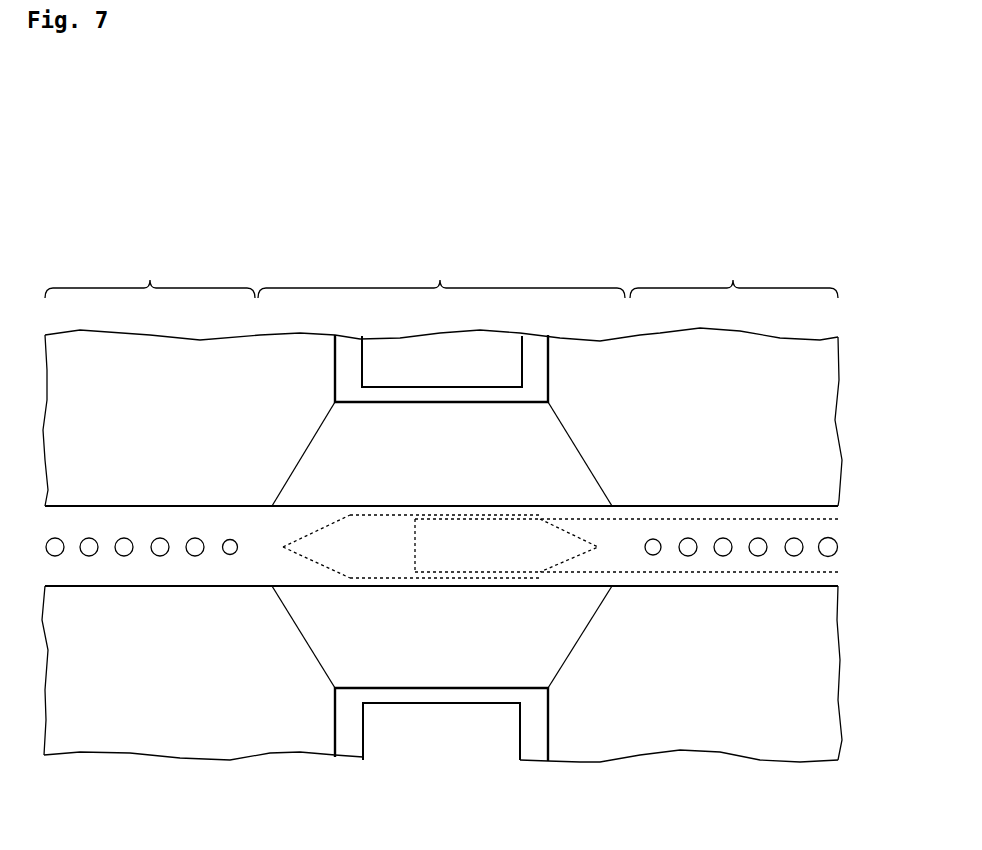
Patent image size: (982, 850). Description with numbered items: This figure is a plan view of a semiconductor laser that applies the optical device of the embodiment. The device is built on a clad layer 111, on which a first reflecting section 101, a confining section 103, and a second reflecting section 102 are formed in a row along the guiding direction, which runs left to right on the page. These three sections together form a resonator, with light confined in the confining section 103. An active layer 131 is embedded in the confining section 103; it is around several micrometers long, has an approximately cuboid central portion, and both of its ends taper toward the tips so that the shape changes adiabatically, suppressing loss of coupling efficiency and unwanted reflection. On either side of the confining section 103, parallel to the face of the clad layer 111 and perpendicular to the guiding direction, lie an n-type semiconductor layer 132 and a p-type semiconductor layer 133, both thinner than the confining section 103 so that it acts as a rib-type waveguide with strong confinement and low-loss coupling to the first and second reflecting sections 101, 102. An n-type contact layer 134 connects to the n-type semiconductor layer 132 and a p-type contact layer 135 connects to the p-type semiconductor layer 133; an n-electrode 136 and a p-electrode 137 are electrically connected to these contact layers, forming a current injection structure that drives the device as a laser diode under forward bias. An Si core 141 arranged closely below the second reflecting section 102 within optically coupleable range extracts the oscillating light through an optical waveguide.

The first reflecting section 101 is at (150, 280).
The second reflecting section 102 is at (733, 280).
The confining section 103 is at (440, 280).
The clad layer 111 is at (838, 390).
The active layer 131 is at (388, 550).
The n-type semiconductor layer 132 is at (573, 632).
The p-type semiconductor layer 133 is at (568, 440).
The n-type contact layer 134 is at (537, 754).
The p-type contact layer 135 is at (537, 346).
The n-electrode 136 is at (392, 756).
The p-electrode 137 is at (447, 344).
The Si core 141 is at (736, 573).